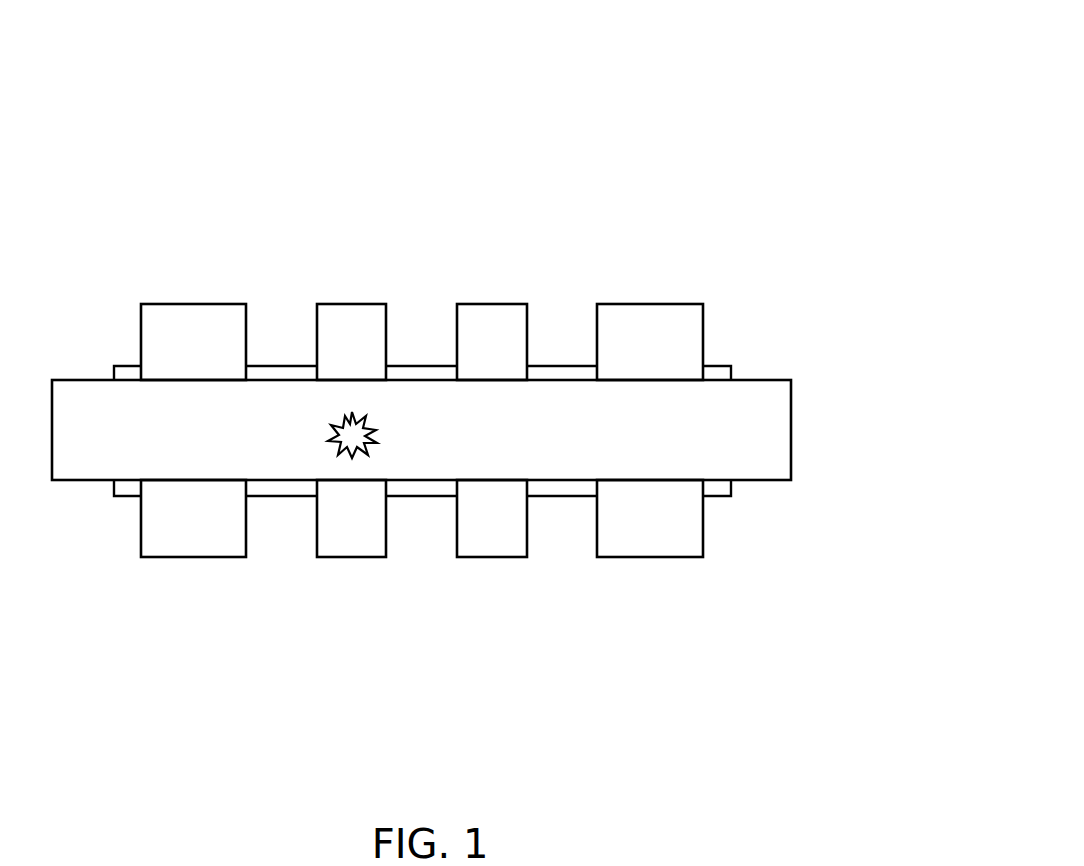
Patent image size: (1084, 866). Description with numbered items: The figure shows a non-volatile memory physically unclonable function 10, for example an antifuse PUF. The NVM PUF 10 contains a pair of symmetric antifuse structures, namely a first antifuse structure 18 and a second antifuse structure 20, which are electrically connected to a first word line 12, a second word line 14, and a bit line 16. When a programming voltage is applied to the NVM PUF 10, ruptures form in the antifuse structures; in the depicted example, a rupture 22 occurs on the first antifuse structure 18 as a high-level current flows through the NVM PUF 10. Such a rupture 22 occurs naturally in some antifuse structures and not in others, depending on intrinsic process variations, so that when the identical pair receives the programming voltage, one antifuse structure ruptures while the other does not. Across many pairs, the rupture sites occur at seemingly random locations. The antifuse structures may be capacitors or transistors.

The non-volatile memory physically unclonable function 10 is at (650, 80).
The first word line 12 is at (194, 304).
The second word line 14 is at (651, 304).
The bit line 16 is at (93, 380).
The first antifuse structure 18 is at (352, 304).
The second antifuse structure 20 is at (493, 304).
The rupture 22 is at (350, 442).